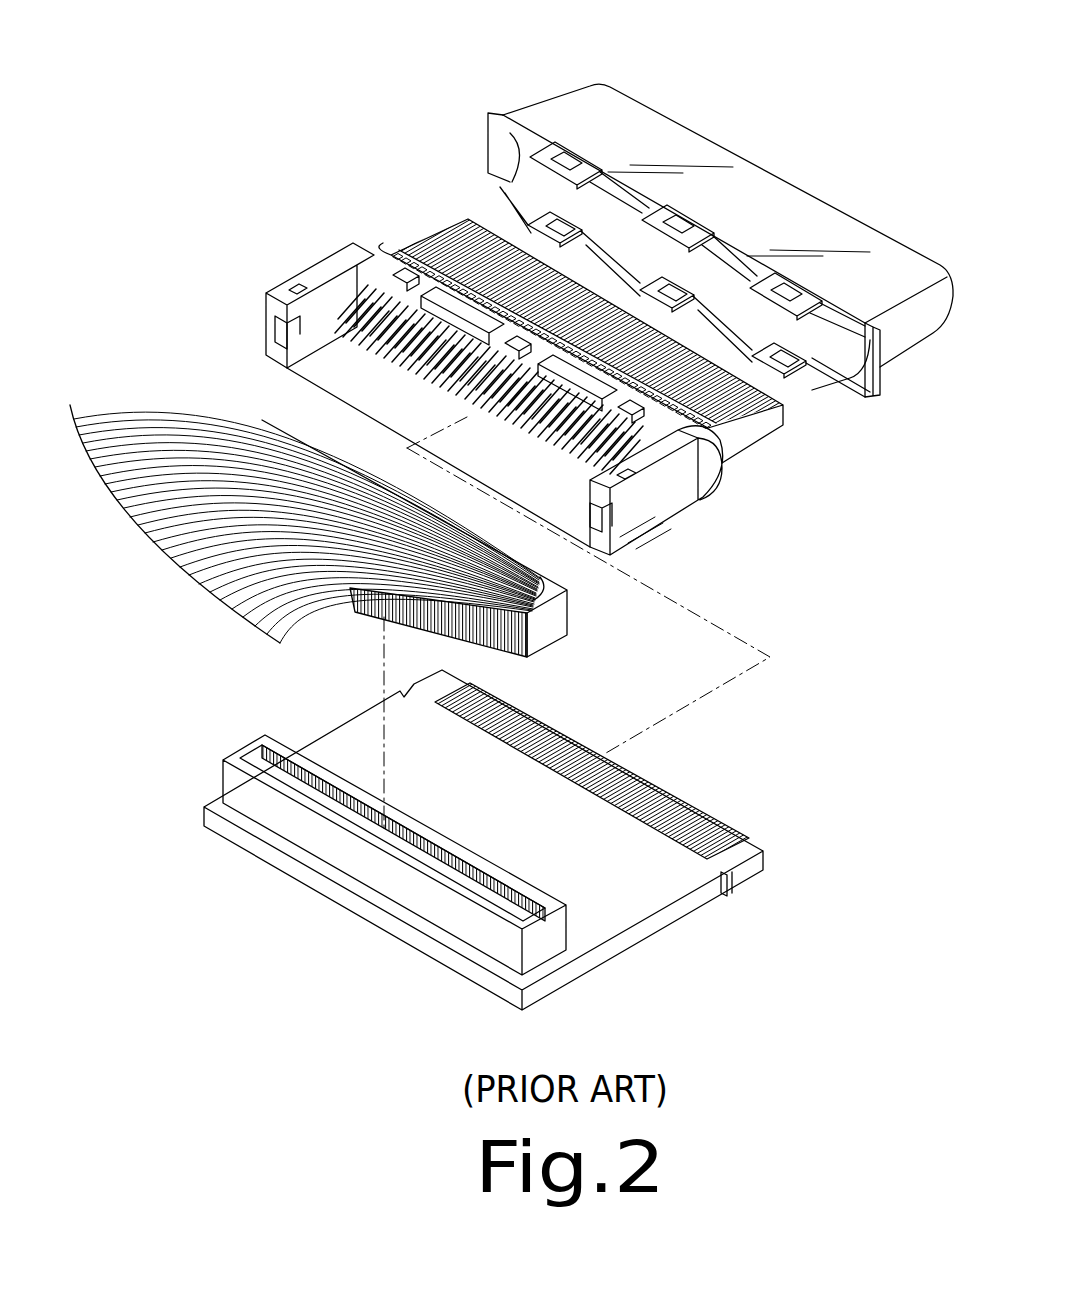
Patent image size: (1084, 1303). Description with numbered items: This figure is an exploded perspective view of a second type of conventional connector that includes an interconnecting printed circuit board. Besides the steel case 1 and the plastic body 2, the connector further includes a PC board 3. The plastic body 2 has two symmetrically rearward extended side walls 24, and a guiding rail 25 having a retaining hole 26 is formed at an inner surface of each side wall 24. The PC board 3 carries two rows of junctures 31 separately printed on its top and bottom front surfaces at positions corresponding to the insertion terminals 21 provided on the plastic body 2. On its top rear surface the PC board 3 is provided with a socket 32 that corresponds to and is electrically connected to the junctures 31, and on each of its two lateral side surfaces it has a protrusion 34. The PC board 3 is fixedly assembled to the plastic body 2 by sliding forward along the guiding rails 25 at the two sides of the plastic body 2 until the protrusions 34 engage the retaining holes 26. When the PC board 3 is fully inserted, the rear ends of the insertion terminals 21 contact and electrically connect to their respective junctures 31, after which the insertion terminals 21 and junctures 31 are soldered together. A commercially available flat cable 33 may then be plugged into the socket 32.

The steel case 1 is at (556, 118).
The plastic body 2 is at (506, 358).
The insertion terminals 21 is at (432, 237).
The side walls 24 is at (657, 512).
The guiding rail 25 is at (268, 335).
The retaining hole 26 is at (307, 315).
The PC board 3 is at (525, 840).
The junctures 31 is at (660, 805).
The socket 32 is at (414, 891).
The flat cable 33 is at (567, 630).
The protrusion 34 is at (735, 886).